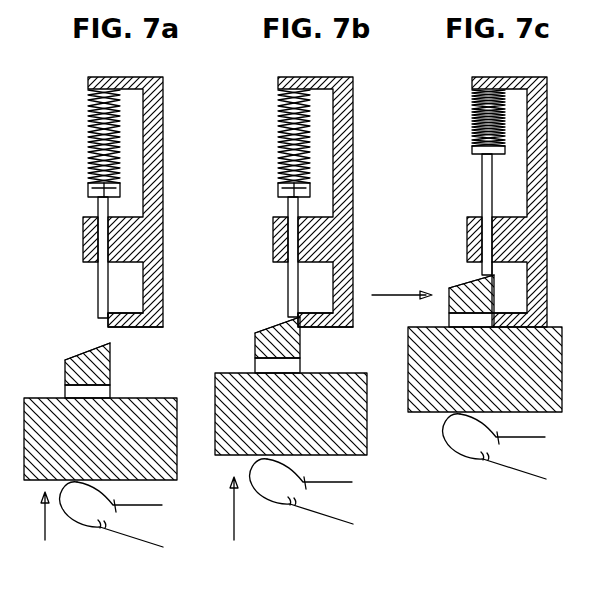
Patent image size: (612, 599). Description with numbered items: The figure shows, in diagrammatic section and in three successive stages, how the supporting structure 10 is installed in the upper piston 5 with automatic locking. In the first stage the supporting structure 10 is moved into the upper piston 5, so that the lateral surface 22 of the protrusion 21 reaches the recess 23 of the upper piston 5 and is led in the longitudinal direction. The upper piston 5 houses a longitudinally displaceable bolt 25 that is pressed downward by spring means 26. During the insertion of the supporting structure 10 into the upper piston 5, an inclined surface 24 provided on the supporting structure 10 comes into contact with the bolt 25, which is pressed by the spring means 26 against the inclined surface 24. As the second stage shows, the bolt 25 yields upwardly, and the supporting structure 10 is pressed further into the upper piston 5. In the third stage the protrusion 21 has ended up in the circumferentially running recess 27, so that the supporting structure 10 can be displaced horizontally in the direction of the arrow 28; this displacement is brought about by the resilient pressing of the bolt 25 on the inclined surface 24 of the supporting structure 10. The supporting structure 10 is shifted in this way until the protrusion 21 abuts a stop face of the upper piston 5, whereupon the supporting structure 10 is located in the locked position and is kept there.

In FIG. 7A, the upper piston 5 is at (165, 162).
In FIG. 7B, the upper piston 5 is at (355, 160).
In FIG. 7C, the upper piston 5 is at (549, 150).
In FIG. 7A, the supporting structure 10 is at (163, 478).
In FIG. 7B, the supporting structure 10 is at (357, 438).
In FIG. 7C, the supporting structure 10 is at (540, 398).
In FIG. 7A, the protrusion 21 is at (80, 372).
In FIG. 7B, the protrusion 21 is at (265, 347).
In FIG. 7C, the protrusion 21 is at (465, 305).
In FIG. 7A, the lateral surface 22 is at (110, 366).
In FIG. 7B, the lateral surface 22 is at (277, 365).
In FIG. 7C, the lateral surface 22 is at (471, 320).
In FIG. 7A, the recess 23 is at (115, 327).
In FIG. 7B, the recess 23 is at (305, 325).
In FIG. 7A, the inclined surface 24 is at (80, 354).
In FIG. 7B, the inclined surface 24 is at (265, 327).
In FIG. 7C, the inclined surface 24 is at (465, 292).
In FIG. 7A, the longitudinally displaceable bolt 25 is at (98, 284).
In FIG. 7B, the longitudinally displaceable bolt 25 is at (290, 285).
In FIG. 7C, the longitudinally displaceable bolt 25 is at (482, 182).
In FIG. 7A, the spring means 26 is at (89, 128).
In FIG. 7B, the spring means 26 is at (280, 127).
In FIG. 7C, the spring means 26 is at (471, 115).
In FIG. 7C, the circumferentially running recess 27 is at (510, 315).
In FIG. 7B, the arrow 28 is at (398, 285).